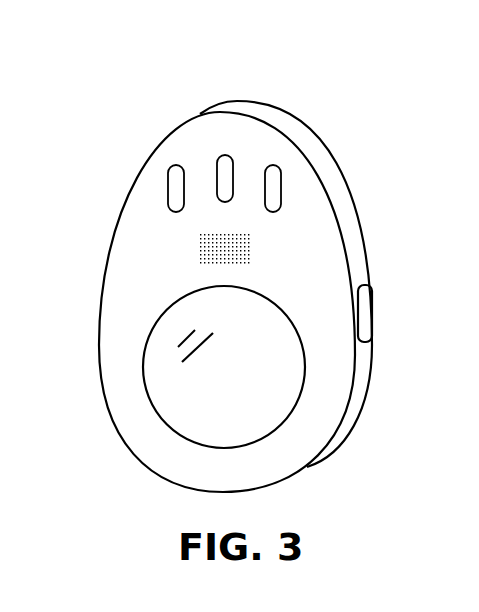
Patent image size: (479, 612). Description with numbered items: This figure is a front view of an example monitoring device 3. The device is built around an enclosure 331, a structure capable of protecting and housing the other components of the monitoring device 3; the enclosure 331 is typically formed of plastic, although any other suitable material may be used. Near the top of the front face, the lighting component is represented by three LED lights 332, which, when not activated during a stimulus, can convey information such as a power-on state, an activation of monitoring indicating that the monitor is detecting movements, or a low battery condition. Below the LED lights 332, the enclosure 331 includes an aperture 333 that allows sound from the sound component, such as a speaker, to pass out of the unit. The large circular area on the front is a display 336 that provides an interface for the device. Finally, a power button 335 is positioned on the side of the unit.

The monitoring device 3 is at (337, 118).
The enclosure 331 is at (322, 275).
The LED lights 332 is at (223, 178).
The aperture 333 is at (213, 246).
The power button 335 is at (367, 312).
The display 336 is at (262, 380).